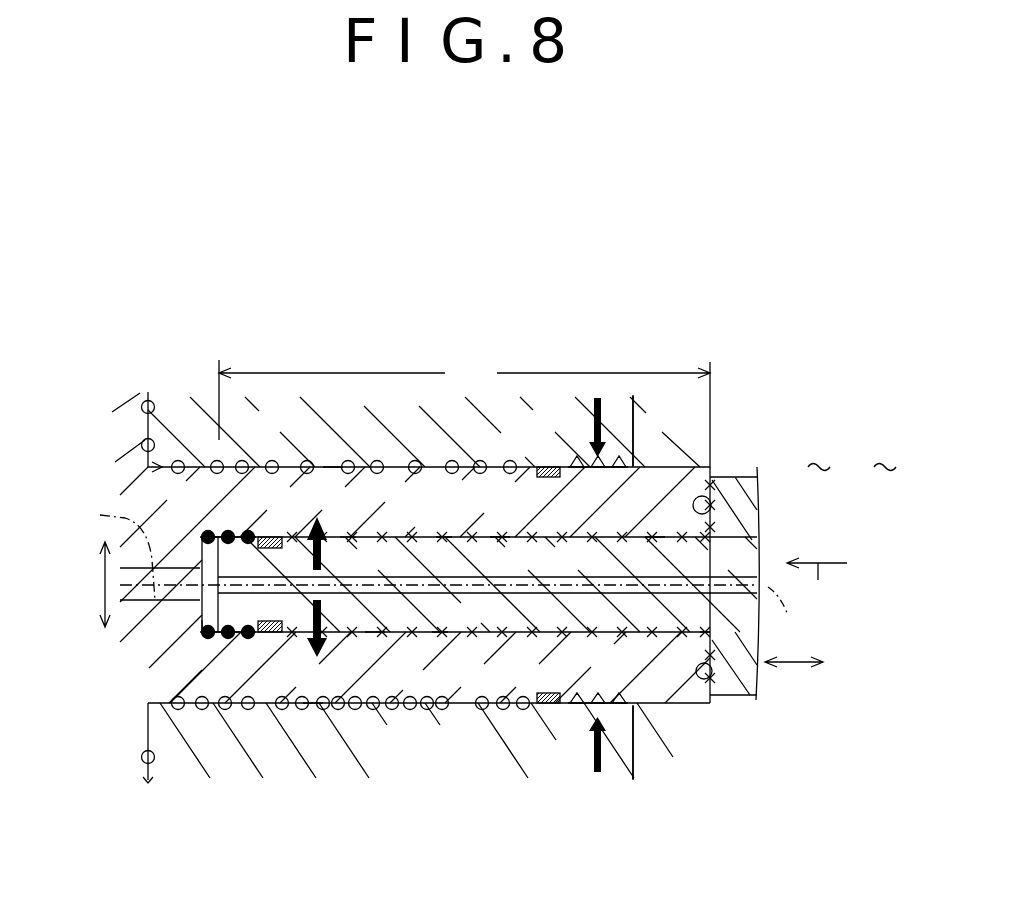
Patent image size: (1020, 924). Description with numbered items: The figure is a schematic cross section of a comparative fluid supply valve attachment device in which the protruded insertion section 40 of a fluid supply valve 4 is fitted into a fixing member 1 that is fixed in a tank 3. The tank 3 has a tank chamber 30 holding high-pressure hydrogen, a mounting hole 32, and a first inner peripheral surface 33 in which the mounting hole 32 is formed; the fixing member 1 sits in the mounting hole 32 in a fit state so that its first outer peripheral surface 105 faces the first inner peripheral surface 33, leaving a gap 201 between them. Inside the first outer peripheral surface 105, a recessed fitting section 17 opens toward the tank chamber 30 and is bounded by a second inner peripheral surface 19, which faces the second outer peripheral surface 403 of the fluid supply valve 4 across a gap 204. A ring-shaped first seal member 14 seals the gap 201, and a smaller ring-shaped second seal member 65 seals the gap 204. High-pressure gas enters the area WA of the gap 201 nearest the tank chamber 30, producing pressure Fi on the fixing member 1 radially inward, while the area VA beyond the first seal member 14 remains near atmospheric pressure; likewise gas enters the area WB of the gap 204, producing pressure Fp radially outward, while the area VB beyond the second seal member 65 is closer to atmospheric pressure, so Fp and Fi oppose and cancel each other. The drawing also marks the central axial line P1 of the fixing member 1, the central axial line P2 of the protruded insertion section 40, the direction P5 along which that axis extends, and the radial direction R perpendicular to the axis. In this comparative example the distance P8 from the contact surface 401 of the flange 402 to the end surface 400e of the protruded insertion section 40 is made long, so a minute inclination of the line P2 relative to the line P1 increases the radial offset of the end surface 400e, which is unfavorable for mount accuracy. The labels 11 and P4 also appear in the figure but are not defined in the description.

The fixing member 1 is at (468, 591).
The housing body 11 is at (690, 480).
The tank 3 is at (445, 440).
The fluid supply valve 4 is at (758, 546).
The first seal member 14 is at (546, 464).
The recessed fitting section 17 is at (499, 536).
The second inner peripheral surface 19 is at (330, 534).
The tank chamber 30 is at (852, 466).
The mounting hole 32 is at (342, 582).
The first inner peripheral surface 33 is at (437, 465).
The protruded insertion section 40 is at (247, 567).
The second seal member 65 is at (272, 534).
The first outer peripheral surface 105 is at (348, 534).
The gap 201 is at (255, 463).
The gap 204 is at (457, 534).
The end surface 400e is at (205, 600).
The contact surface 401 is at (736, 482).
The flange 402 is at (758, 505).
The second outer peripheral surface 403 is at (445, 536).
The distance P8 is at (464, 376).
The central axial line of the fixing member P1 is at (106, 549).
The central axial line of the protruded insertion section P2 is at (785, 616).
The position P4 is at (817, 584).
The direction P5 is at (797, 664).
The radial direction R is at (100, 583).
The pressure Fi is at (617, 812).
The pressure Fp is at (330, 557).
The area VA is at (338, 450).
The area VB is at (204, 520).
The area WA is at (599, 484).
The area WB is at (507, 542).